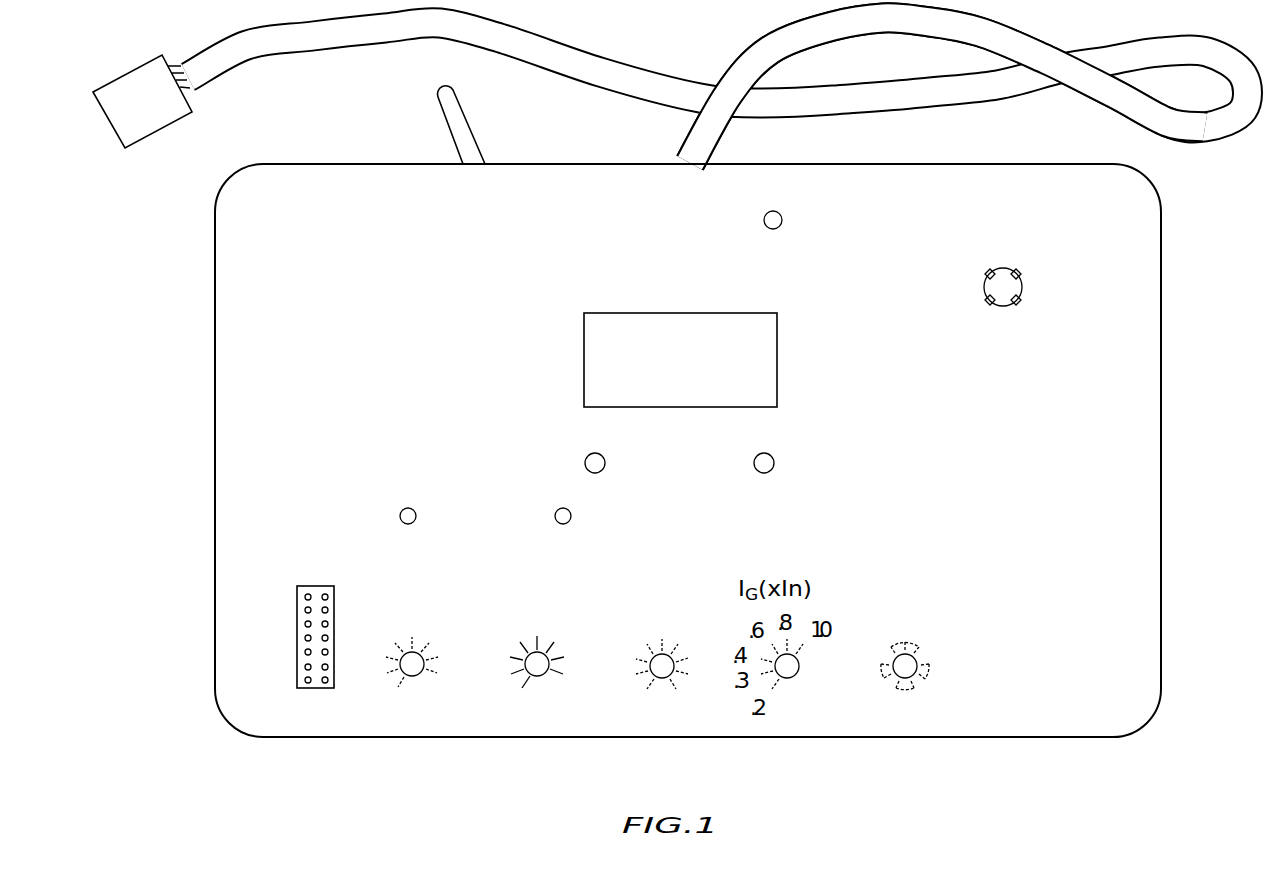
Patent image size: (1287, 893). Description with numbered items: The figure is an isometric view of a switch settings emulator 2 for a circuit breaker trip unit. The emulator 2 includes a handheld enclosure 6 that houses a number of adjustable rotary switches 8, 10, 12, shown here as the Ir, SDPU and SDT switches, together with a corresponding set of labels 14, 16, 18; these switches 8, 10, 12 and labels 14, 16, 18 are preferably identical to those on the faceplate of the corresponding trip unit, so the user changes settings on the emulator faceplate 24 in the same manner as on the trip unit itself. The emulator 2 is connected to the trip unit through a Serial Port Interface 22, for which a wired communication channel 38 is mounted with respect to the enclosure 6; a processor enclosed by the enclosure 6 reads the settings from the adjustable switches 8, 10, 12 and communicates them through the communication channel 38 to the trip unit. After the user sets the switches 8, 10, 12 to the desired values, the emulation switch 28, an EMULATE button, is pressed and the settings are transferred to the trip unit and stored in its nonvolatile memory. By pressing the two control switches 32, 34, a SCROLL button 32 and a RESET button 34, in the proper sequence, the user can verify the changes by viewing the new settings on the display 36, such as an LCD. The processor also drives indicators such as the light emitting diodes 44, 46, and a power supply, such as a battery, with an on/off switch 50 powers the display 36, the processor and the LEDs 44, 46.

The switch settings emulator 2 is at (693, 450).
The handheld enclosure 6 is at (213, 417).
The adjustable rotary switch 8 is at (412, 670).
The adjustable rotary switch 10 is at (662, 672).
The adjustable rotary switch 12 is at (905, 672).
The label 14 is at (395, 675).
The label 16 is at (621, 718).
The label 18 is at (893, 678).
The Serial Port Interface 22 is at (137, 148).
The emulator faceplate 24 is at (1097, 573).
The emulation switch 28 is at (1008, 265).
The SCROLL button 32 is at (605, 461).
The RESET button 34 is at (775, 461).
The display 36 is at (583, 341).
The communication channel 38 is at (1220, 142).
The light emitting diode 44 is at (562, 508).
The light emitting diode 46 is at (408, 508).
The on/off switch 50 is at (447, 110).